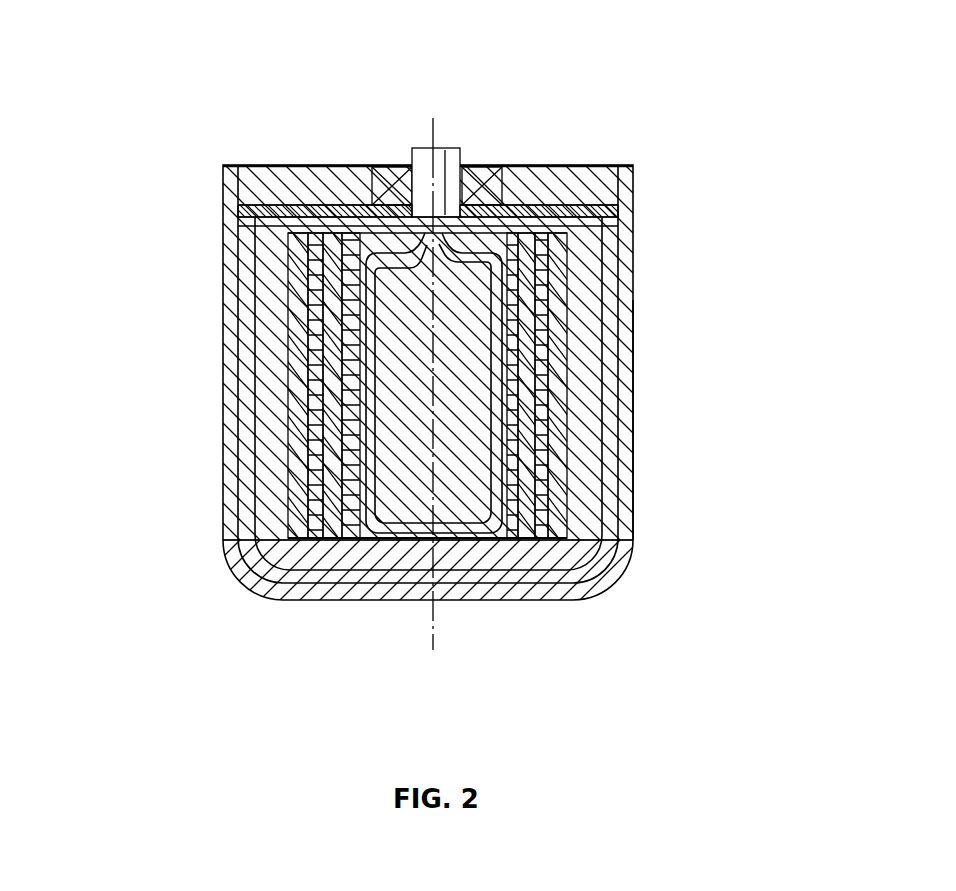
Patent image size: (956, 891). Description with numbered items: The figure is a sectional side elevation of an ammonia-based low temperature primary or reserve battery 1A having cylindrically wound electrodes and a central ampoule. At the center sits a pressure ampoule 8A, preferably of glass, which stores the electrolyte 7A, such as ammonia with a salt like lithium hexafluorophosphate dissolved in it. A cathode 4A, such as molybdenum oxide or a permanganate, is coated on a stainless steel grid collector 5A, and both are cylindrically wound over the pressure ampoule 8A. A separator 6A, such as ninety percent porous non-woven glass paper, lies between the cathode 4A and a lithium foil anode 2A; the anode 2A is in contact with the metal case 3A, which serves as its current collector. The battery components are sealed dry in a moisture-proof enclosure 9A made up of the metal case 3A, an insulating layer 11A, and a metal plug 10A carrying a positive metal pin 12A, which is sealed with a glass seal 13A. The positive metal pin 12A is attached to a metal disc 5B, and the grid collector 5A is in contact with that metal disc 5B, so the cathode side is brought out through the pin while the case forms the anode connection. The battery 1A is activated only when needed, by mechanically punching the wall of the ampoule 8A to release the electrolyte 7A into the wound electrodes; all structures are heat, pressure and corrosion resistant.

The ammonium based low temperature primary or reserve battery 1A is at (304, 756).
The lithium foil anode 2A is at (608, 335).
The metal case 3A is at (222, 268).
The cathode 4A is at (298, 365).
The stainless steel grid collector 5A is at (310, 433).
The metal disc 5B is at (223, 227).
The separator 6A is at (270, 314).
The electrolyte 7A is at (407, 493).
The pressure ampoule 8A is at (468, 530).
The moisture-proof enclosure 9A is at (637, 417).
The metal plug 10A is at (552, 166).
The insulating layer 11A is at (612, 213).
The positive metal pin 12A is at (449, 147).
The glass seal 13A is at (385, 166).